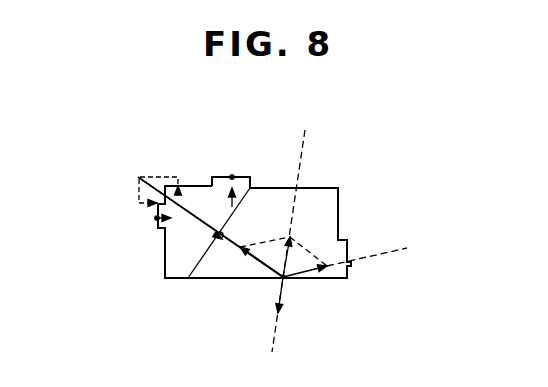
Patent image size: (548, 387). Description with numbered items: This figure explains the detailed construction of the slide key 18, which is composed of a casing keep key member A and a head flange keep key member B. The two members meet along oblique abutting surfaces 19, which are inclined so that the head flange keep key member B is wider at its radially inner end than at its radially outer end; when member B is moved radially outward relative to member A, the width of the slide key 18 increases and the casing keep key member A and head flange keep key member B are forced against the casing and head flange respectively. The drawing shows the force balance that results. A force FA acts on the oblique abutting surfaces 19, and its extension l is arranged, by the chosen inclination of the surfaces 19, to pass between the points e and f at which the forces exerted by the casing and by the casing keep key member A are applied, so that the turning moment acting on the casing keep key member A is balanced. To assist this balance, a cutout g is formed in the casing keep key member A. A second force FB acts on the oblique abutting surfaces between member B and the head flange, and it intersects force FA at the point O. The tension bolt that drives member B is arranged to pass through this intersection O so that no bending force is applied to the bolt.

The slide key 18 is at (330, 186).
The oblique abutting surfaces 19 is at (232, 220).
The casing keep key member A is at (165, 265).
The head flange keep key member B is at (338, 212).
The intersection of forces FA and FB O is at (280, 279).
The force acting on the oblique abutting surfaces 19 FA is at (248, 260).
The force acting on the oblique abutting surfaces 20 FB is at (315, 278).
The point of application of force exerted by the casing e is at (157, 218).
The point of application of force exerted by the casing keep key member f is at (232, 177).
The cutout g is at (197, 186).
The extension of force FA l is at (159, 182).